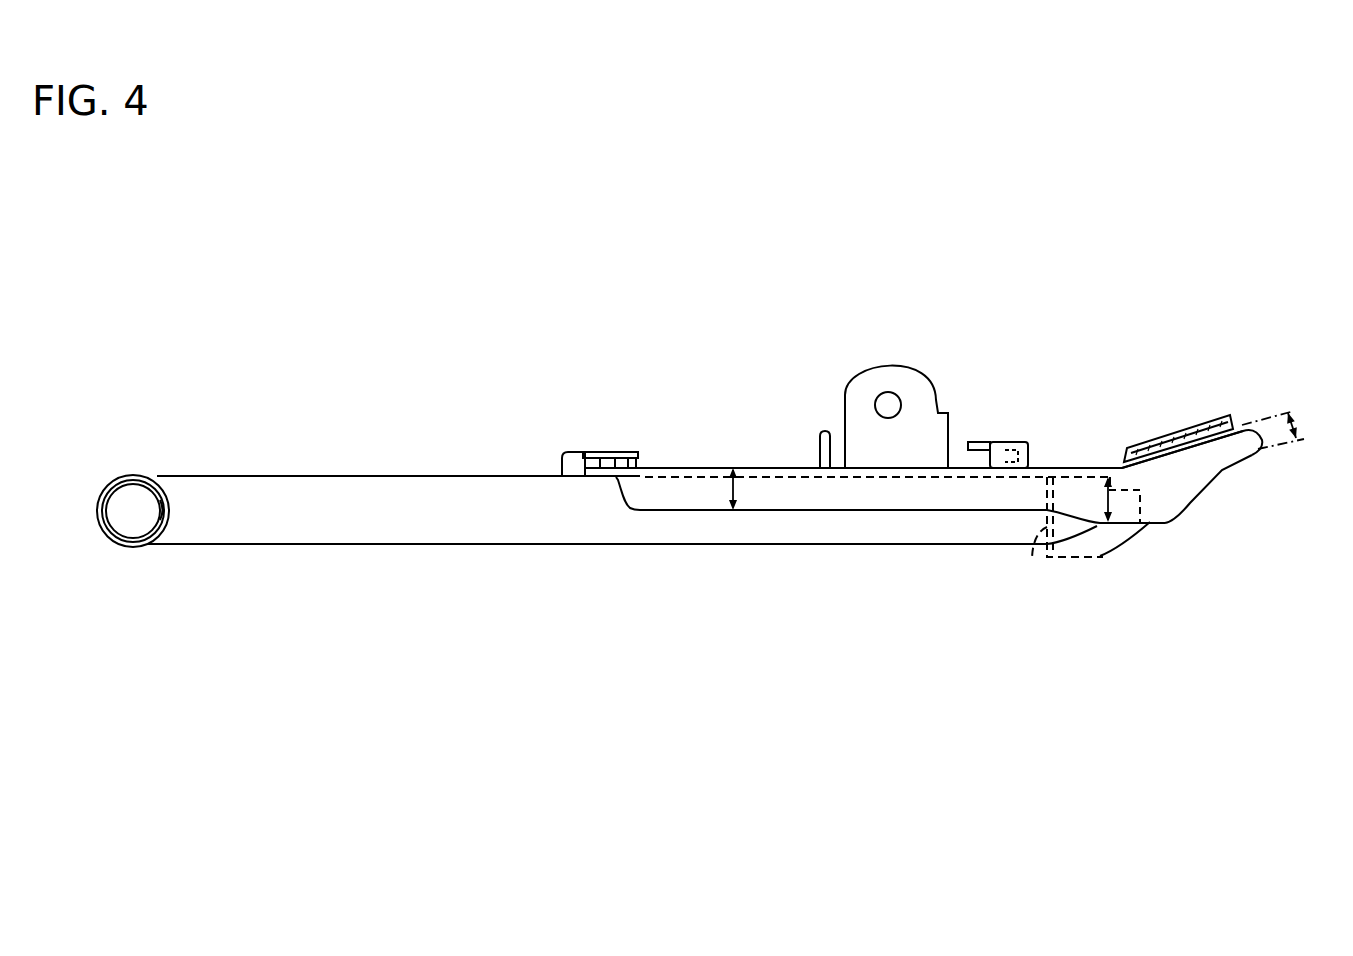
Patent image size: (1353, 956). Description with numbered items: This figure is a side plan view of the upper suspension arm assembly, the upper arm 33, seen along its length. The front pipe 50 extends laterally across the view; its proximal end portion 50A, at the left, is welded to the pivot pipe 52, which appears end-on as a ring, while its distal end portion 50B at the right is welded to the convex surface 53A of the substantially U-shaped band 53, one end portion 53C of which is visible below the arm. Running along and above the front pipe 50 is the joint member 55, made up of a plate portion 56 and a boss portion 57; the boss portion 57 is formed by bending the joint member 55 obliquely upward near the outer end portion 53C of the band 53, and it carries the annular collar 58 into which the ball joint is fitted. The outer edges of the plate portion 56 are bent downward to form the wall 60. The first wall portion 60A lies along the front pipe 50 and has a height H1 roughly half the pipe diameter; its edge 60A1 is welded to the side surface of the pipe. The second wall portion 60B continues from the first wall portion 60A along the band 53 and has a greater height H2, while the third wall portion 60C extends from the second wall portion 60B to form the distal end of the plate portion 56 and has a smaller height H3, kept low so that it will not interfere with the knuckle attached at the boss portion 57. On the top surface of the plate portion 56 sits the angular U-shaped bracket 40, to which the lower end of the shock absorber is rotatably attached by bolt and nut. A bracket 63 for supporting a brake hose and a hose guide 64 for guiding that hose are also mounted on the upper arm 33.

The upper arm 33 is at (515, 372).
The bracket 40 is at (875, 368).
The front pipe 50 is at (412, 525).
The proximal end portion 50A is at (162, 528).
The distal end portion 50B is at (1097, 527).
The pivot pipe 52 is at (128, 476).
The U-shaped band 53 is at (1087, 557).
The convex surface 53A is at (1032, 560).
The end portion 53C is at (1145, 527).
The joint member 55 is at (1190, 296).
The plate portion 56 is at (957, 458).
The boss portion 57 is at (1173, 418).
The annular collar 58 is at (1225, 416).
The wall 60 is at (685, 492).
The first wall portion 60A is at (815, 500).
The edge 60A1 is at (912, 510).
The second wall portion 60B is at (1157, 503).
The third wall portion 60C is at (1253, 443).
The bracket 63 is at (590, 452).
The hose guide 64 is at (820, 440).
The height H1 is at (737, 470).
The height H2 is at (1108, 477).
The height H3 is at (1298, 410).